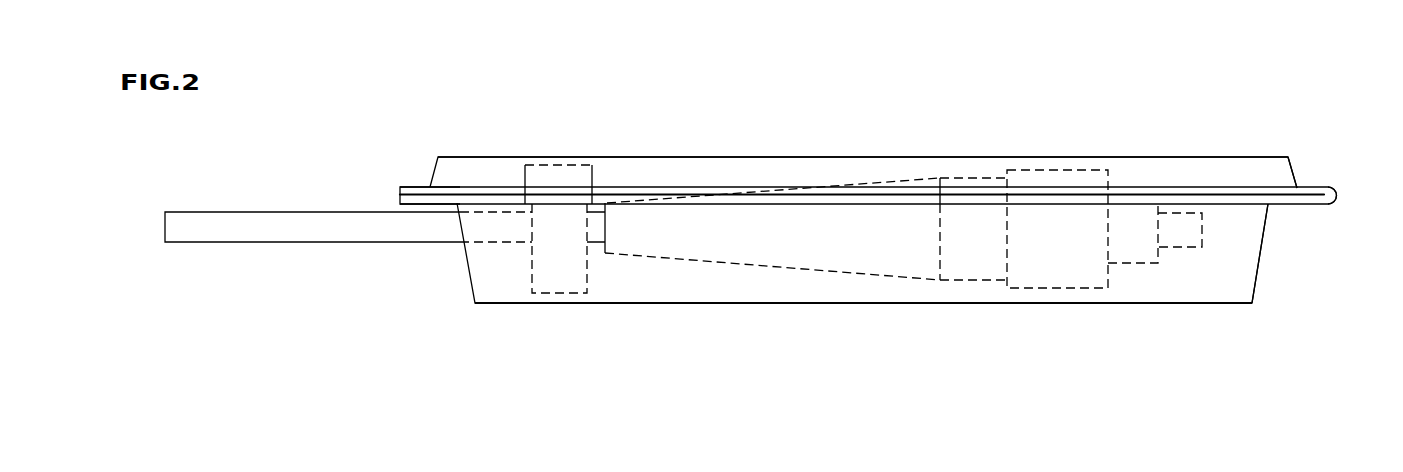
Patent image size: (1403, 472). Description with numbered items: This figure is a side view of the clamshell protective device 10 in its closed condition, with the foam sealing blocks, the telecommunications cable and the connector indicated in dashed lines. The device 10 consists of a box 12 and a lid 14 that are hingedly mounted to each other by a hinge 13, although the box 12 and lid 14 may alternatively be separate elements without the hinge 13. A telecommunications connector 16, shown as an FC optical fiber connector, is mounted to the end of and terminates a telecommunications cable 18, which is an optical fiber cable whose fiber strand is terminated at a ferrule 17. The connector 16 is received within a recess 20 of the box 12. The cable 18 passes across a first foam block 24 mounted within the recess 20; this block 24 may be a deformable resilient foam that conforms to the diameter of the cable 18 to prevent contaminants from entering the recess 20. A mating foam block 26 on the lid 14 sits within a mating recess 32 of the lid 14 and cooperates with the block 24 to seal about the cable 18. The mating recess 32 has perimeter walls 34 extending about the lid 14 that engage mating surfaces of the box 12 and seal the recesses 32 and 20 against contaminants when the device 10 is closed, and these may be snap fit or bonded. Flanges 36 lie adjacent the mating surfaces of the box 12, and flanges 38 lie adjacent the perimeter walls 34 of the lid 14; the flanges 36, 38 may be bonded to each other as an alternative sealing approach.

The clamshell protective device 10 is at (796, 326).
The box 12 is at (1147, 290).
The hinge 13 is at (1333, 207).
The lid 14 is at (1155, 175).
The telecommunications connector 16 is at (1048, 253).
The ferrule 17 is at (1182, 227).
The telecommunications cable 18 is at (231, 222).
The recess 20 is at (670, 292).
The first foam block 24 is at (558, 265).
The mating foam block 26 is at (555, 175).
The mating recess 32 is at (720, 154).
The perimeter walls 34 is at (1282, 180).
The flanges 36 is at (410, 204).
The flanges 38 is at (407, 183).